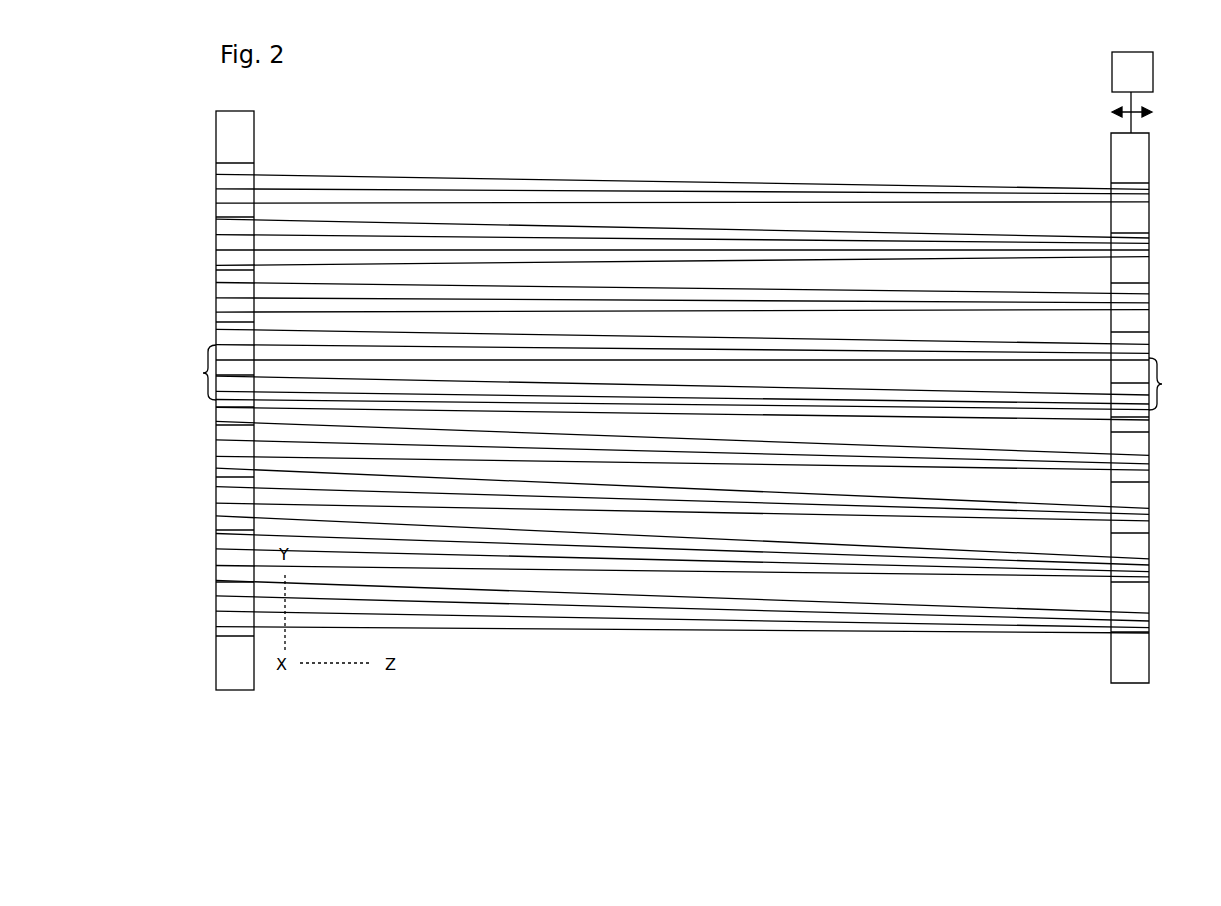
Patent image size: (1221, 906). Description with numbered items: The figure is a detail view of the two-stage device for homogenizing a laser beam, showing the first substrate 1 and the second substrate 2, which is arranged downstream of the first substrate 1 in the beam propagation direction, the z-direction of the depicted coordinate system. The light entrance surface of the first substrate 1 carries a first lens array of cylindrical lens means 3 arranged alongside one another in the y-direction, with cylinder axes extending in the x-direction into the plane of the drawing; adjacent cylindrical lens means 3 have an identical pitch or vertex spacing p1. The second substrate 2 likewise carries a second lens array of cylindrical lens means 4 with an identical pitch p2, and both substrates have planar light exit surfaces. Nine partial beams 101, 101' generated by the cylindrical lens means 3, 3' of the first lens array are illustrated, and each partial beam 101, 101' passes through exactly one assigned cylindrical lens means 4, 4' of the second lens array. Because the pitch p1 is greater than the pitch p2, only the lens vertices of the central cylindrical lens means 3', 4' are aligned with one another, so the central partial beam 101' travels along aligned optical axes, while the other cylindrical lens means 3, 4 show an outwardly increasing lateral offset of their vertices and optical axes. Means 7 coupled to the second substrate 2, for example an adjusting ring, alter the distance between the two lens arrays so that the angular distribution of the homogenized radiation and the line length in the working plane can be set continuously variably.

The first substrate 1 is at (230, 706).
The second substrate 2 is at (1119, 702).
The cylindrical lens means 3 is at (203, 398).
The central cylindrical lens means 3' is at (193, 408).
The cylindrical lens means 4 is at (1155, 403).
The central cylindrical lens means 4' is at (1158, 423).
The means for altering the distance 7 is at (1132, 92).
The partial beams 101 is at (682, 389).
The central partial beam 101' is at (682, 393).
The pitch of the first lens array p1 is at (193, 372).
The pitch of the second lens array p2 is at (1169, 384).